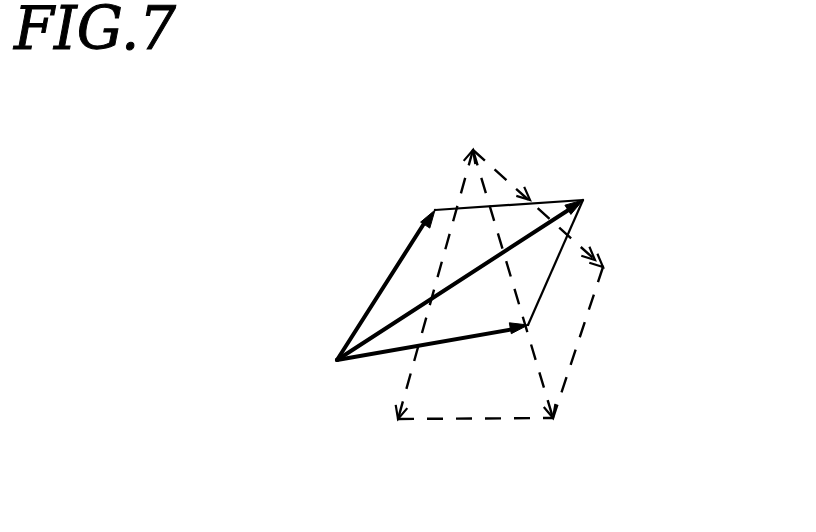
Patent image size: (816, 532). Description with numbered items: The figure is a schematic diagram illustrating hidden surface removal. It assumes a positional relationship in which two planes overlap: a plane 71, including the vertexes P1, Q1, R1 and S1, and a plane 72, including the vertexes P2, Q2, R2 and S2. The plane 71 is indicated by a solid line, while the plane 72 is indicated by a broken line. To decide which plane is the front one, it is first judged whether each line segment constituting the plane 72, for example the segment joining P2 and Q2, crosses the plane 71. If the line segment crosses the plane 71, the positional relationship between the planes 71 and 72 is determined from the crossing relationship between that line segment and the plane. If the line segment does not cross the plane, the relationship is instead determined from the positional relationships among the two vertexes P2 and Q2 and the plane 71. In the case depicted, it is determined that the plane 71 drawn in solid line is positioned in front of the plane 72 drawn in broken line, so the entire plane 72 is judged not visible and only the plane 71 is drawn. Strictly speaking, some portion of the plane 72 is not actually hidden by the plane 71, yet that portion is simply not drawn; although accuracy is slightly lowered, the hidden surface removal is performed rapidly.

The plane 71 is at (583, 222).
The plane 72 is at (578, 332).
The vertex P1 is at (315, 364).
The vertex Q1 is at (554, 309).
The vertex R1 is at (607, 187).
The vertex S1 is at (415, 205).
The vertex P2 is at (471, 130).
The vertex Q2 is at (378, 443).
The vertex R2 is at (574, 447).
The vertex S2 is at (631, 264).